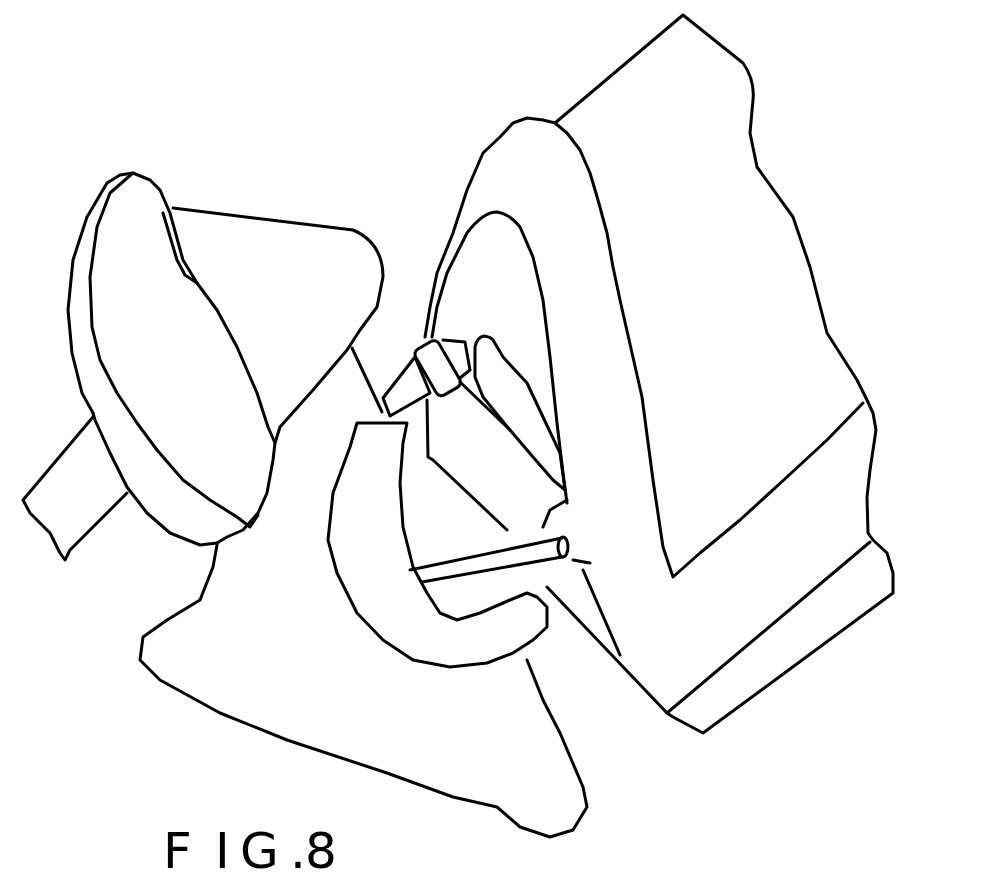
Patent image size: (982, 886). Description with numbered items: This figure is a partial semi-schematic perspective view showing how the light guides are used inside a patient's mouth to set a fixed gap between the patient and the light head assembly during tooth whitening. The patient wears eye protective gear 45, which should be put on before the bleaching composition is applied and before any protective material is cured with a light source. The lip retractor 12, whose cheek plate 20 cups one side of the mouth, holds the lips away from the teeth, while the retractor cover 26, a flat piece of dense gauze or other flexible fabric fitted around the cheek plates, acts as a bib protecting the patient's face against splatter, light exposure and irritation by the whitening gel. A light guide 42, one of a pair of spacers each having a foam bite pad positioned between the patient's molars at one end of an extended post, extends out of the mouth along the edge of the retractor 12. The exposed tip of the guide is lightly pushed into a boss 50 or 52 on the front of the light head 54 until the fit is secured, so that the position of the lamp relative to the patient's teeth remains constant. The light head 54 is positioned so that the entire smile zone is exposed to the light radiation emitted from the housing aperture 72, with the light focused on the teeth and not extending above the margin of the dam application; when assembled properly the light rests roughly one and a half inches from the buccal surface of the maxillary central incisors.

The lip retractor 12 is at (360, 497).
The cheek plate 20 is at (388, 585).
The retractor cover 26 is at (470, 751).
The light guide 42 is at (461, 562).
The eye protective gear 45 is at (144, 225).
The boss 50 is at (418, 343).
The boss 52 is at (573, 537).
The light head 54 is at (733, 293).
The housing aperture 72 is at (497, 360).